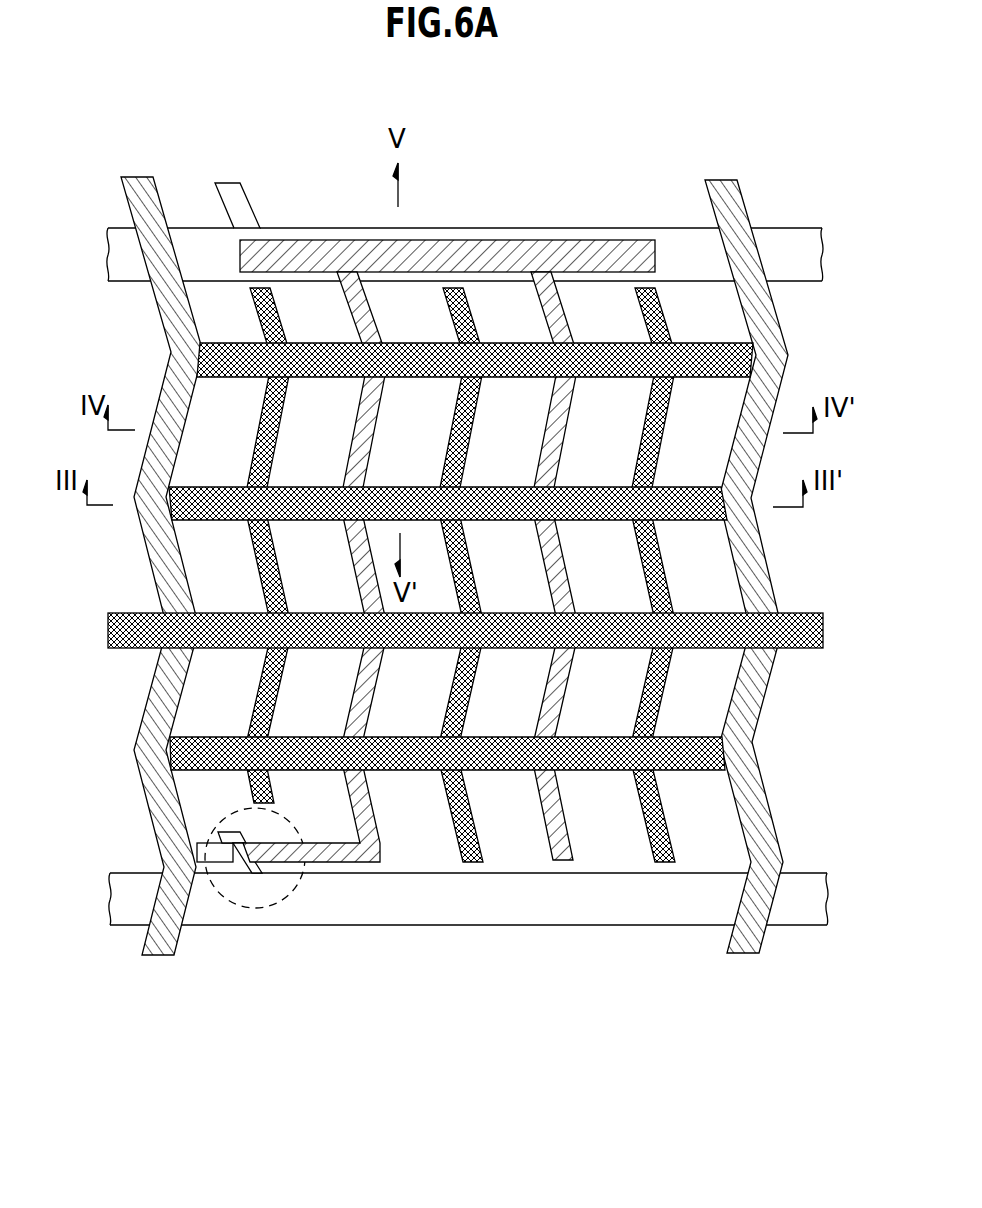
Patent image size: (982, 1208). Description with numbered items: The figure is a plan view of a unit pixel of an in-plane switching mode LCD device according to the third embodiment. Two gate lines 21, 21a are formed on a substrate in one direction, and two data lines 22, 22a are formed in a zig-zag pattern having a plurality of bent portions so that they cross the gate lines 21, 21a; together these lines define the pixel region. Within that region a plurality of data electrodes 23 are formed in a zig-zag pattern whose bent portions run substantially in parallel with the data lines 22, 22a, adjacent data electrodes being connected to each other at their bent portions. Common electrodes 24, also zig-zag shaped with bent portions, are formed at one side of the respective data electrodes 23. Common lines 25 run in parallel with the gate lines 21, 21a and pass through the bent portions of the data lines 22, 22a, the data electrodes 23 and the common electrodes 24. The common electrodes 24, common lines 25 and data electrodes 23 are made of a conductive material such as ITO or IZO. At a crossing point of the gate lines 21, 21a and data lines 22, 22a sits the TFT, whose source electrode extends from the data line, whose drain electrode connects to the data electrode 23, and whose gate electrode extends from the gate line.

The gate line 21 is at (818, 898).
The gate line 21a is at (823, 256).
The data line 22 is at (158, 957).
The data line 22a is at (743, 955).
The data electrode 23 is at (550, 677).
The common electrode 24 is at (468, 559).
The common line 25 is at (755, 350).
The thin film transistor TFT is at (282, 890).